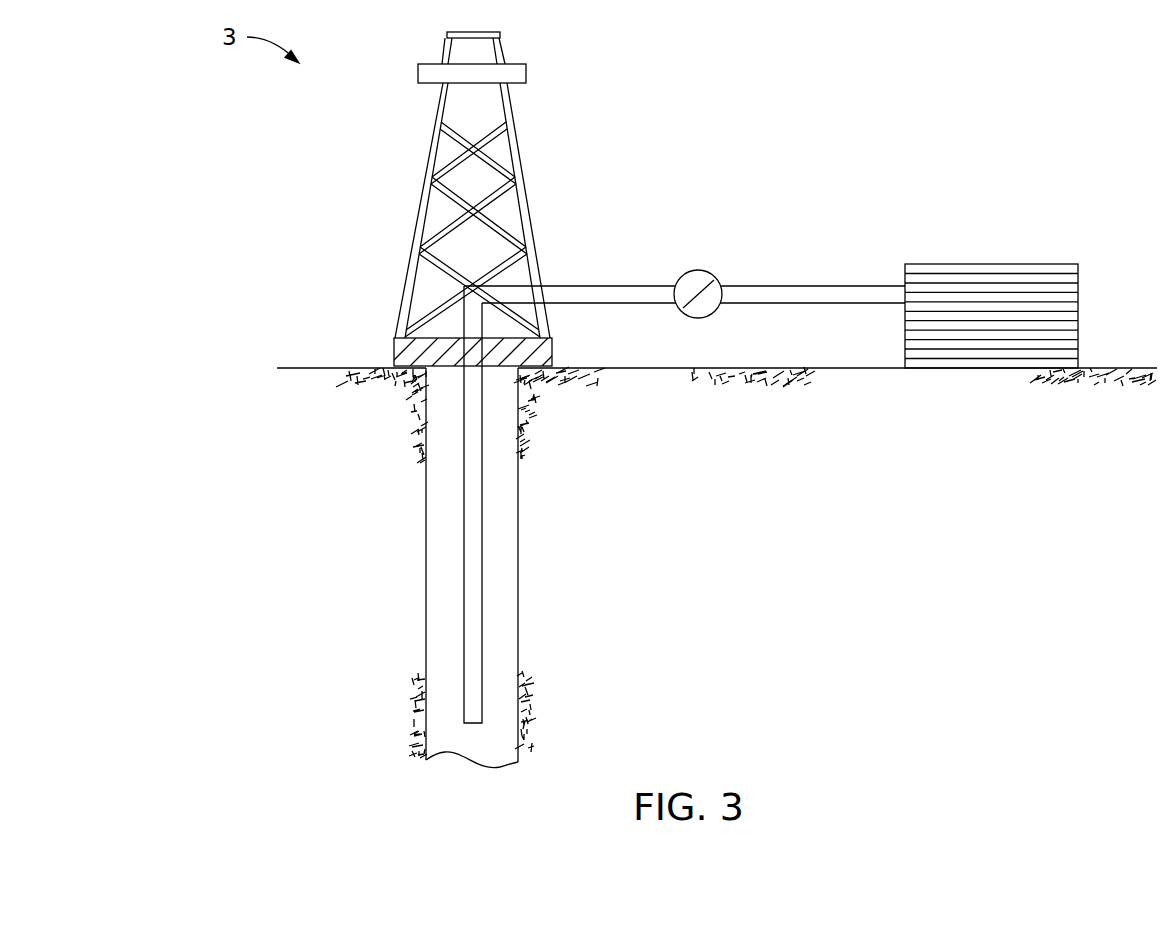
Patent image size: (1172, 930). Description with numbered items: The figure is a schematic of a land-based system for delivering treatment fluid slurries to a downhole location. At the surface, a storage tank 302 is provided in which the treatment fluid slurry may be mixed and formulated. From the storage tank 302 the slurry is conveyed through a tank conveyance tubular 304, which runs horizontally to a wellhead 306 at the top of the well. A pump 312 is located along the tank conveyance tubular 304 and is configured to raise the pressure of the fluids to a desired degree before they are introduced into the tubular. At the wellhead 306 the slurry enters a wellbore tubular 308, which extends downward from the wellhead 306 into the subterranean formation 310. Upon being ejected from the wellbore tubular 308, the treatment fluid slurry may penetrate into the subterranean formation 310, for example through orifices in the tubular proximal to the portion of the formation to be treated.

The storage tank 302 is at (949, 263).
The tank conveyance tubular 304 is at (590, 285).
The wellhead 306 is at (393, 353).
The wellbore tubular 308 is at (520, 565).
The subterranean formation 310 is at (253, 608).
The pump 312 is at (697, 270).